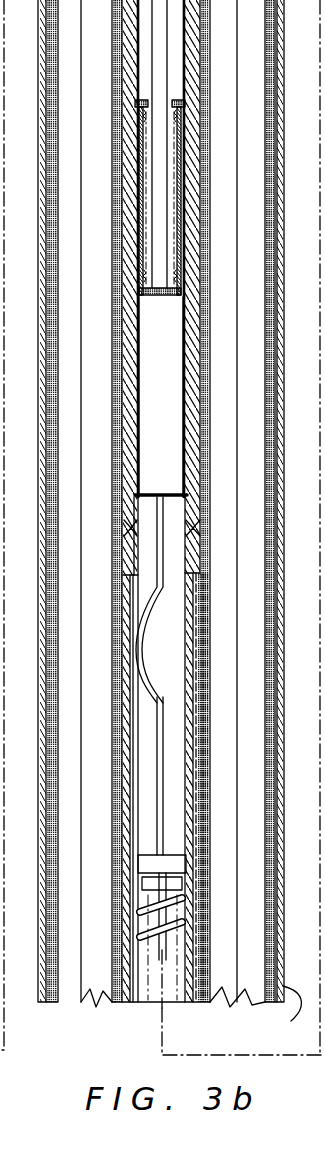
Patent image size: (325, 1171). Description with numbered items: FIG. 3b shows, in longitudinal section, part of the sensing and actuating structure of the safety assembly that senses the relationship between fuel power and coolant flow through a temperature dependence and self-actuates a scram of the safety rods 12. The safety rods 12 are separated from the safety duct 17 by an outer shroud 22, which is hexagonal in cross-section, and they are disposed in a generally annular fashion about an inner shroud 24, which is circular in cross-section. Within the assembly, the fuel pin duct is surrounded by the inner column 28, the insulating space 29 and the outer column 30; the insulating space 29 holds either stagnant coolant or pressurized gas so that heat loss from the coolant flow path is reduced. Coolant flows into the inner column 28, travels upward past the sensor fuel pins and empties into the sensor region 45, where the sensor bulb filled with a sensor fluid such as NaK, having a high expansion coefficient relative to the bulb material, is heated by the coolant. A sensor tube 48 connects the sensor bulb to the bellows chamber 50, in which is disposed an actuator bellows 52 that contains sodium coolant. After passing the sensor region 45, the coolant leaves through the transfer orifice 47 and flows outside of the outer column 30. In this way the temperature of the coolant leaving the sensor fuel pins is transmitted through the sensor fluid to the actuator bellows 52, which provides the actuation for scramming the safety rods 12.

The safety rods 12 is at (253, 193).
The safety duct 17 is at (285, 1011).
The outer shroud 22 is at (277, 917).
The inner shroud 24 is at (205, 881).
The inner column 28 is at (193, 738).
The insulating space 29 is at (197, 795).
The outer column 30 is at (207, 825).
The sensor region 45 is at (177, 602).
The transfer orifice 47 is at (197, 528).
The sensor tube 48 is at (167, 705).
The bellows chamber 50 is at (172, 361).
The actuator bellows 52 is at (186, 125).